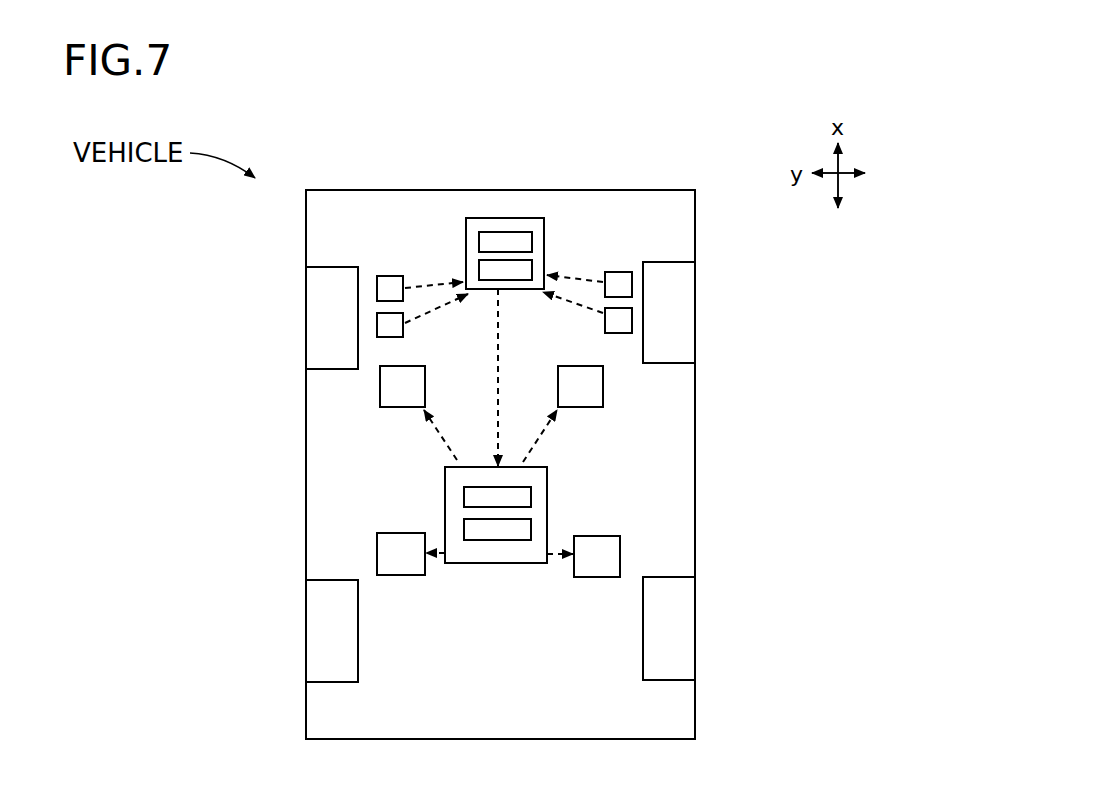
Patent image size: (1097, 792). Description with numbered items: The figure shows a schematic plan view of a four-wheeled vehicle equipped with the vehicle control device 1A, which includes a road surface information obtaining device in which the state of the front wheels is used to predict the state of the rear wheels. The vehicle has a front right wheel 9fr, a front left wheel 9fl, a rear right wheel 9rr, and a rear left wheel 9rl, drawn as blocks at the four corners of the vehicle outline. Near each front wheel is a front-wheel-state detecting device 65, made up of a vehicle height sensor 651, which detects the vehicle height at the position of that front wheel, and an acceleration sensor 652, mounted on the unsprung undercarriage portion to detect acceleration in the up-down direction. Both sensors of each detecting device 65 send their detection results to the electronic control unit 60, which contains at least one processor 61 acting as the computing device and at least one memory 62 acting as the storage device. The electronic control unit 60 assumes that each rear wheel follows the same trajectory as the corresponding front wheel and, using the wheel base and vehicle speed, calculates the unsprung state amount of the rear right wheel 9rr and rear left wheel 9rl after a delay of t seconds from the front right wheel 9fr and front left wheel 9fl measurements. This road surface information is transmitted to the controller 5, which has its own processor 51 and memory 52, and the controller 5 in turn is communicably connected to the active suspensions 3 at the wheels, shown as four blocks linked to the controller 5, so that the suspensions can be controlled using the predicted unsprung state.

The vehicle control device 1A is at (423, 158).
The active suspension 3 is at (385, 388).
The controller 5 is at (501, 504).
The processor 51 is at (523, 498).
The memory 52 is at (523, 530).
The electronic control unit 60 is at (513, 246).
The processor 61 is at (488, 240).
The memory 62 is at (482, 269).
The front-wheel-state detecting device 65 is at (500, 291).
The vehicle height sensor 651 is at (390, 283).
The acceleration sensor 652 is at (392, 328).
The front right wheel 9fr is at (318, 295).
The front left wheel 9fl is at (683, 278).
The rear right wheel 9rr is at (318, 628).
The rear left wheel 9rl is at (682, 628).